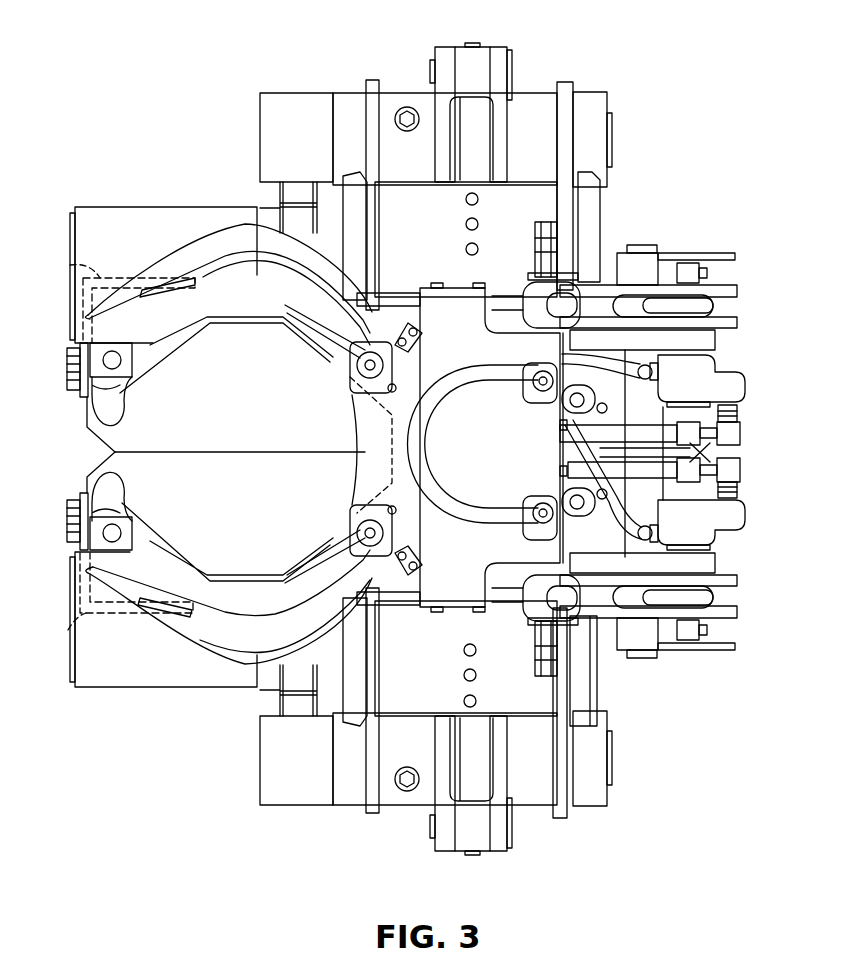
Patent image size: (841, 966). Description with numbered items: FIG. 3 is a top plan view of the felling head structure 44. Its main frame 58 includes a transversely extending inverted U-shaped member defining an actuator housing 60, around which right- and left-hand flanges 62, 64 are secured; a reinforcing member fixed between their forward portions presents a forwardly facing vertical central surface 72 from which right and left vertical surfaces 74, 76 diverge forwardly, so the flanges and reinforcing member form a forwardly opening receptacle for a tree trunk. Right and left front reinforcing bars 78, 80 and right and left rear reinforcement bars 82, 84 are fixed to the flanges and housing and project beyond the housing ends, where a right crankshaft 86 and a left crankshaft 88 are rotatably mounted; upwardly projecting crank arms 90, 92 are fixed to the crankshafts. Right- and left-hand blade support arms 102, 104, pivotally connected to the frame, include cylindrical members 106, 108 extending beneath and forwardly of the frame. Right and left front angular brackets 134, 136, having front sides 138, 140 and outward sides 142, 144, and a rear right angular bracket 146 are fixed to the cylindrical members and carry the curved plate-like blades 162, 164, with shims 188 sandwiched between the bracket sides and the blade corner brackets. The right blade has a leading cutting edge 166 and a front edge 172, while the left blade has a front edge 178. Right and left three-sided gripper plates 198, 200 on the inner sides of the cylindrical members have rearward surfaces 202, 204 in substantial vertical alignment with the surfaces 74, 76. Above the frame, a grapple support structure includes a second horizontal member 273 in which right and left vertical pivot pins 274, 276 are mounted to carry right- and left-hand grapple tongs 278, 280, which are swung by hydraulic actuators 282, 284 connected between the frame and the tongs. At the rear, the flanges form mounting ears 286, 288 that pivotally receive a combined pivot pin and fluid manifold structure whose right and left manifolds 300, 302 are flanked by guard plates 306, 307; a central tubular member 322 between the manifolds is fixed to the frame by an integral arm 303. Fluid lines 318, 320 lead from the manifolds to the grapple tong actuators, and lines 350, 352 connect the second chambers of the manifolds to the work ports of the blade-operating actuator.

The felling head structure 44 is at (120, 195).
The main frame 58 is at (603, 228).
The actuator housing 60 is at (428, 663).
The right-hand flange 62 is at (394, 293).
The left-hand flange 64 is at (392, 604).
The forwardly facing vertical central surface 72 is at (385, 440).
The right vertical surface 74 is at (324, 350).
The left vertical surface 76 is at (345, 540).
The right front reinforcing bar 78 is at (362, 207).
The left front reinforcing bar 80 is at (360, 696).
The right rear reinforcement bar 82 is at (572, 206).
The left rear reinforcement bar 84 is at (590, 683).
The right crankshaft 86 is at (608, 152).
The left crankshaft 88 is at (606, 772).
The upwardly projecting crank arm 90 is at (443, 47).
The upwardly projecting crank arm 92 is at (441, 848).
The right-hand blade support arm 102 is at (163, 206).
The left-hand blade support arm 104 is at (128, 691).
The cylindrical member 106 is at (124, 232).
The cylindrical member 108 is at (117, 657).
The right front angular bracket 134 is at (78, 393).
The left front angular bracket 136 is at (72, 490).
The front side 138 is at (75, 362).
The front side 140 is at (75, 532).
The outward side 142 is at (82, 268).
The outward side 144 is at (88, 620).
The rear right angular bracket 146 is at (120, 500).
The right blade 162 is at (226, 386).
The left blade 164 is at (236, 494).
The leading cutting edge 166 is at (187, 455).
The front edge 172 is at (85, 415).
The front edge 178 is at (78, 462).
The shims 188 is at (118, 393).
The right gripper plate 198 is at (192, 326).
The left gripper plate 200 is at (182, 560).
The rearward surface 202 is at (295, 320).
The rearward surface 204 is at (297, 566).
The second horizontal member 273 is at (420, 512).
The right vertical pivot pin 274 is at (367, 372).
The left vertical pivot pin 276 is at (367, 518).
The right-hand grapple tong 278 is at (223, 227).
The left-hand grapple tong 280 is at (232, 662).
The hydraulic actuator 282 is at (482, 390).
The hydraulic actuator 284 is at (475, 508).
The mounting ear 286 is at (716, 306).
The mounting ear 288 is at (712, 598).
The right manifold 300 is at (706, 382).
The left manifold 302 is at (704, 527).
The integral arm 303 is at (640, 446).
The guard plate 306 is at (698, 253).
The guard plate 307 is at (698, 651).
The hydraulic fluid line 318 is at (472, 377).
The hydraulic fluid line 320 is at (618, 512).
The central tubular member 322 is at (720, 450).
The fluid line 350 is at (572, 438).
The fluid line 352 is at (578, 463).